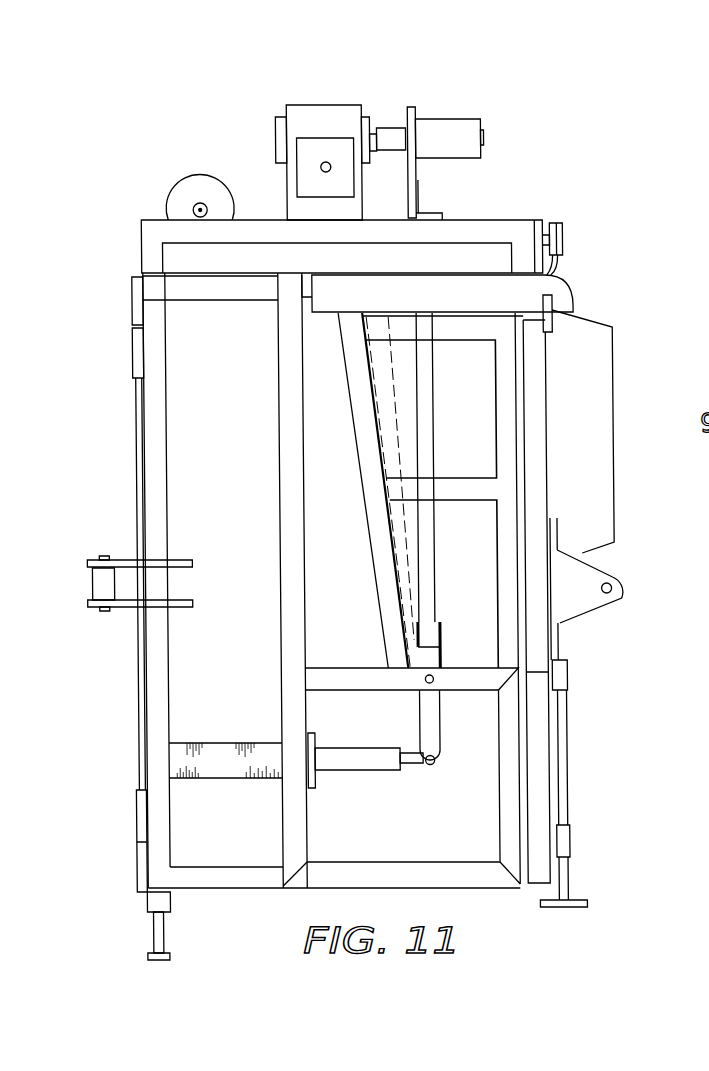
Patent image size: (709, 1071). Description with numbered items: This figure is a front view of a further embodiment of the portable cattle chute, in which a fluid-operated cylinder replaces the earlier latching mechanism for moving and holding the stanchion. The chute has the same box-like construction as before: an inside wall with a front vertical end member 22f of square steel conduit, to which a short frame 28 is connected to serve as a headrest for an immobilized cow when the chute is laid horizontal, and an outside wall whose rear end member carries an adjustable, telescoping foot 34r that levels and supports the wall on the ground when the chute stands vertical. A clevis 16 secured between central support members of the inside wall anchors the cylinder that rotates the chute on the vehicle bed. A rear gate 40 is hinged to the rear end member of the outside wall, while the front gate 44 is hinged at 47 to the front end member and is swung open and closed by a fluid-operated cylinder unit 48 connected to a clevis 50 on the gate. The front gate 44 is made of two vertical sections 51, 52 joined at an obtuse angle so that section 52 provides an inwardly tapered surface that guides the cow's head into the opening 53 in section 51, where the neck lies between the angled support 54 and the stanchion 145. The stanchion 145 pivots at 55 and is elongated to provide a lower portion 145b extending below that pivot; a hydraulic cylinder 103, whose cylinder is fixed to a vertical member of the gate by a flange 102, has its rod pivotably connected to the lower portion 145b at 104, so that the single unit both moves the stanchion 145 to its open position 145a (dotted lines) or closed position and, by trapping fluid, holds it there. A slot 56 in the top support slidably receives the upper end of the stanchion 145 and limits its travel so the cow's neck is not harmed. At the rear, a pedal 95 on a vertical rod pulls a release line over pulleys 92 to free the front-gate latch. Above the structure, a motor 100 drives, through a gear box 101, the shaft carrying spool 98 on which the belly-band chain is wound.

The spool 98 is at (191, 183).
The gear box 101 is at (292, 126).
The motor 100 is at (483, 118).
The pulleys 92 is at (566, 238).
The hinge 47 is at (135, 355).
The vertical section of front gate 52 is at (236, 418).
The vertical section of front gate 51 is at (306, 300).
The stanchion 145 is at (427, 376).
The opening 53 is at (452, 462).
The short frame 28 is at (537, 368).
The rear gate 40 is at (508, 466).
The clevis 50 is at (155, 559).
The fluid-operated cylinder unit 48 is at (93, 581).
The clevis 16 is at (607, 572).
The open position of stanchion 145a is at (405, 577).
The angled support 54 is at (380, 623).
The slot 56 is at (455, 665).
The pivot point 55 is at (433, 688).
The lower portion of stanchion 145b is at (427, 733).
The front gate 44 is at (478, 758).
The front vertical end member 22f is at (543, 795).
The flange 102 is at (319, 780).
The hydraulic cylinder 103 is at (388, 772).
The pivotal connection 104 is at (436, 766).
The foot 34r is at (148, 934).
The pedal 95 is at (582, 903).